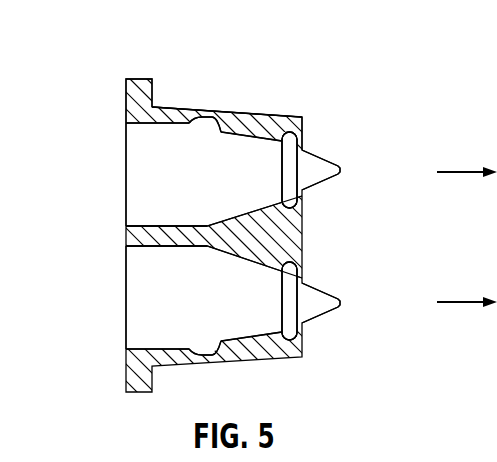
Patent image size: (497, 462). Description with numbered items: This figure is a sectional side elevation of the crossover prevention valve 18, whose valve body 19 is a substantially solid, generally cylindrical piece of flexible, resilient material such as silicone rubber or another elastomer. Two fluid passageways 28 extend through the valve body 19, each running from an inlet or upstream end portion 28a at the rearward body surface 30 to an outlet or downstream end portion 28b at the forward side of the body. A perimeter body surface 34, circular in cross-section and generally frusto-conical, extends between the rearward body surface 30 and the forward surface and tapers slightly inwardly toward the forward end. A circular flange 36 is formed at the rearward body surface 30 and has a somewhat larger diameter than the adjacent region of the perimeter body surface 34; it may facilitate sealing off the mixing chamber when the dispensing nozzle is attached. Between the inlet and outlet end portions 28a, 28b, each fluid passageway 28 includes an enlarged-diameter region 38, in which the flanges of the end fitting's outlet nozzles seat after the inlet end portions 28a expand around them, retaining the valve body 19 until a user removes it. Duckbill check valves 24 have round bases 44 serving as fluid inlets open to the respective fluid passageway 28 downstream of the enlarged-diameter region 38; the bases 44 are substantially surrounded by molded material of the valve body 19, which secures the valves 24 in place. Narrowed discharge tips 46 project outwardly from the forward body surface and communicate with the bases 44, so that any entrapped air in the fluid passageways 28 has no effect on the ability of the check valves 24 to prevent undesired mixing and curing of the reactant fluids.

The crossover prevention valve 18 is at (332, 41).
The valve body 19 is at (224, 113).
The duckbill check valve 24 is at (279, 168).
The fluid passageway 28 is at (182, 161).
The inlet end portion 28a is at (117, 206).
The outlet end portion 28b is at (269, 122).
The rearward body surface 30 is at (117, 237).
The perimeter body surface 34 is at (214, 102).
The circular flange 36 is at (143, 80).
The enlarged-diameter region 38 is at (196, 128).
The round base 44 is at (296, 208).
The discharge tip 46 is at (338, 166).